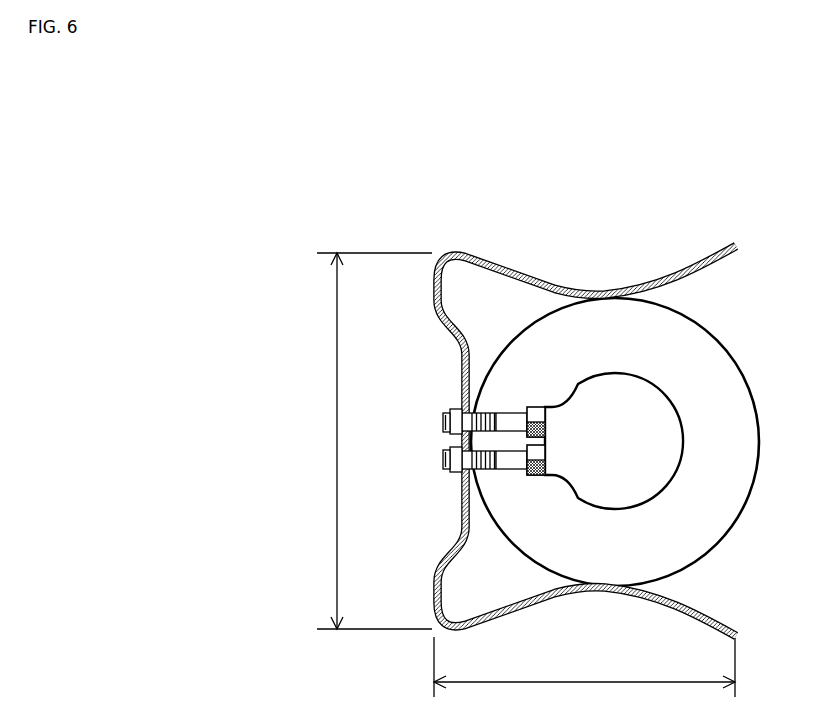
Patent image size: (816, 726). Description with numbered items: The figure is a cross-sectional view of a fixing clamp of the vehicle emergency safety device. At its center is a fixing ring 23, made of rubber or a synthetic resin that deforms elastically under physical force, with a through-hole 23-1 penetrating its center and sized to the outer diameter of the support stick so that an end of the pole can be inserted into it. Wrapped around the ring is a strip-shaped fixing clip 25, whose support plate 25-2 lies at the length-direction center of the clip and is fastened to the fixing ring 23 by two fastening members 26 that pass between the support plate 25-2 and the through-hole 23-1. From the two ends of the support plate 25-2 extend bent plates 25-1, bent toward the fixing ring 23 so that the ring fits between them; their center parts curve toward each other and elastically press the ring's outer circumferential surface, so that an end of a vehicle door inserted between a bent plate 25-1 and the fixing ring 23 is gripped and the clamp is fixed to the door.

The fixing ring 23 is at (576, 552).
The through-hole 23-1 is at (619, 478).
The fixing clip 25 is at (461, 368).
The bent plates 25-1 is at (584, 673).
The support plate 25-2 is at (352, 441).
The fastening members 26 is at (442, 419).